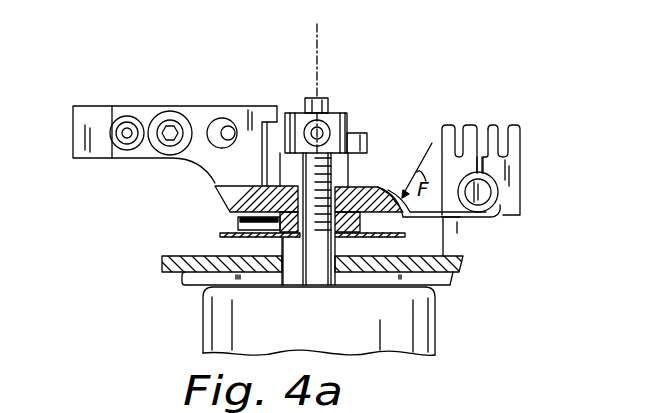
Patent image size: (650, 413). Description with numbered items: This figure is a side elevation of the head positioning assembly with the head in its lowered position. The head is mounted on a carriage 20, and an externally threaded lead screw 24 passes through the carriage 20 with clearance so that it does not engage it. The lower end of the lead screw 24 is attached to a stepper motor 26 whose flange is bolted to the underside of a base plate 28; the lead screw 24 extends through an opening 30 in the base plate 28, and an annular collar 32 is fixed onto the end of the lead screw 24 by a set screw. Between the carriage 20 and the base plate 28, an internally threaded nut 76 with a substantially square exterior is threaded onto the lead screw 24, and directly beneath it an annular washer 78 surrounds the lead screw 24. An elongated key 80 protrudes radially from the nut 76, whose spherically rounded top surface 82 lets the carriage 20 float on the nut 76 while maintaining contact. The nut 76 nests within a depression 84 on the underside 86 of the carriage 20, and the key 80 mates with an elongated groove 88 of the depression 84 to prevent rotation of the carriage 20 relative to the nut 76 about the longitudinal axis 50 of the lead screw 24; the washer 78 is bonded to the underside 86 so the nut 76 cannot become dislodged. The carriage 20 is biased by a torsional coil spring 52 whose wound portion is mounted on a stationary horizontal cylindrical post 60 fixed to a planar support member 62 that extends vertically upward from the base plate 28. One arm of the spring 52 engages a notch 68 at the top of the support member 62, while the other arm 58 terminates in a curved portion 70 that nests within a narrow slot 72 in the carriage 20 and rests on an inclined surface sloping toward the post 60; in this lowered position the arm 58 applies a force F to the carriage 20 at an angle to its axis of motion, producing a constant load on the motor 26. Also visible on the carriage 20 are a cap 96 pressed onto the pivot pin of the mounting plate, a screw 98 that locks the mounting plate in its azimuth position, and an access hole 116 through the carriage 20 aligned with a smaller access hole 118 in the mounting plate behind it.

The carriage 20 is at (93, 113).
The lead screw 24 is at (325, 100).
The stepper motor 26 is at (205, 333).
The base plate 28 is at (160, 260).
The opening 30 is at (323, 258).
The annular collar 32 is at (347, 125).
The longitudinal axis 50 is at (317, 47).
The torsional coil spring 52 is at (506, 214).
The arm 58 is at (448, 217).
The cylindrical post 60 is at (488, 195).
The support member 62 is at (515, 162).
The notch 68 is at (478, 157).
The curved portion 70 is at (393, 187).
The slot 72 is at (380, 184).
The nut 76 is at (286, 237).
The annular washer 78 is at (258, 236).
The key 80 is at (237, 223).
The top surface 82 is at (290, 212).
The depression 84 is at (350, 237).
The underside 86 is at (392, 234).
The groove 88 is at (240, 220).
The cap 96 is at (125, 120).
The screw 98 is at (170, 110).
The access hole 116 is at (213, 120).
The access hole 118 is at (233, 118).